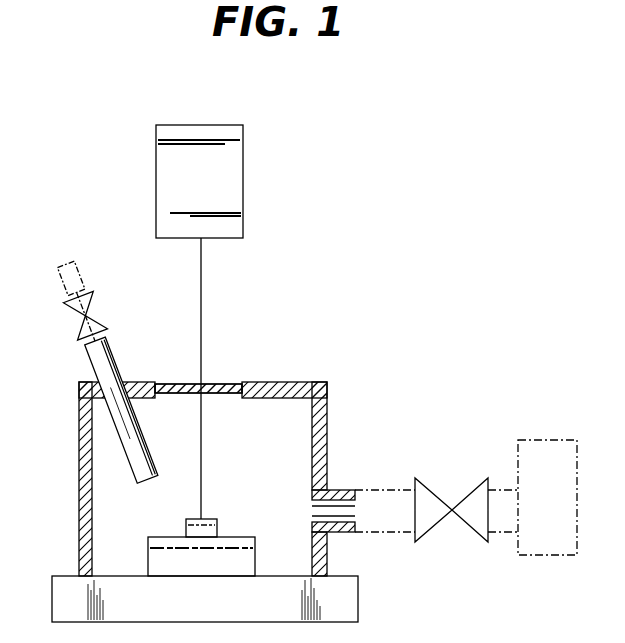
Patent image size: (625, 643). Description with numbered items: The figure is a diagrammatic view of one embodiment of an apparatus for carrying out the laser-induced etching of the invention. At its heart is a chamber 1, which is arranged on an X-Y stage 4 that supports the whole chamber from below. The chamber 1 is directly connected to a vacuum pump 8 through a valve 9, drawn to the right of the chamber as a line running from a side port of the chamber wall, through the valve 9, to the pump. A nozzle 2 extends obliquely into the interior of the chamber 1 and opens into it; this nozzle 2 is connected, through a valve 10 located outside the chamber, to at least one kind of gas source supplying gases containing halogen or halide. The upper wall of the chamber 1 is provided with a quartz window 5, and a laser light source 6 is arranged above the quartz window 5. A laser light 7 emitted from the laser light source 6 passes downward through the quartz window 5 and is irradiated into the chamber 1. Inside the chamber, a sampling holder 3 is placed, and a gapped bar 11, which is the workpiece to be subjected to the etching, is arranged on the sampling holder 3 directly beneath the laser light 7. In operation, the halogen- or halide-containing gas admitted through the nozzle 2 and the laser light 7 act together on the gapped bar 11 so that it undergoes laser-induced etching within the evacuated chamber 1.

The chamber 1 is at (79, 455).
The nozzle 2 is at (107, 368).
The sampling holder 3 is at (246, 545).
The X-Y stage 4 is at (62, 575).
The quartz window 5 is at (233, 382).
The laser light source 6 is at (243, 180).
The laser light 7 is at (201, 285).
The vacuum pump 8 is at (548, 440).
The valve 9 is at (434, 490).
The valve 10 is at (93, 293).
The gapped bar 11 is at (186, 523).